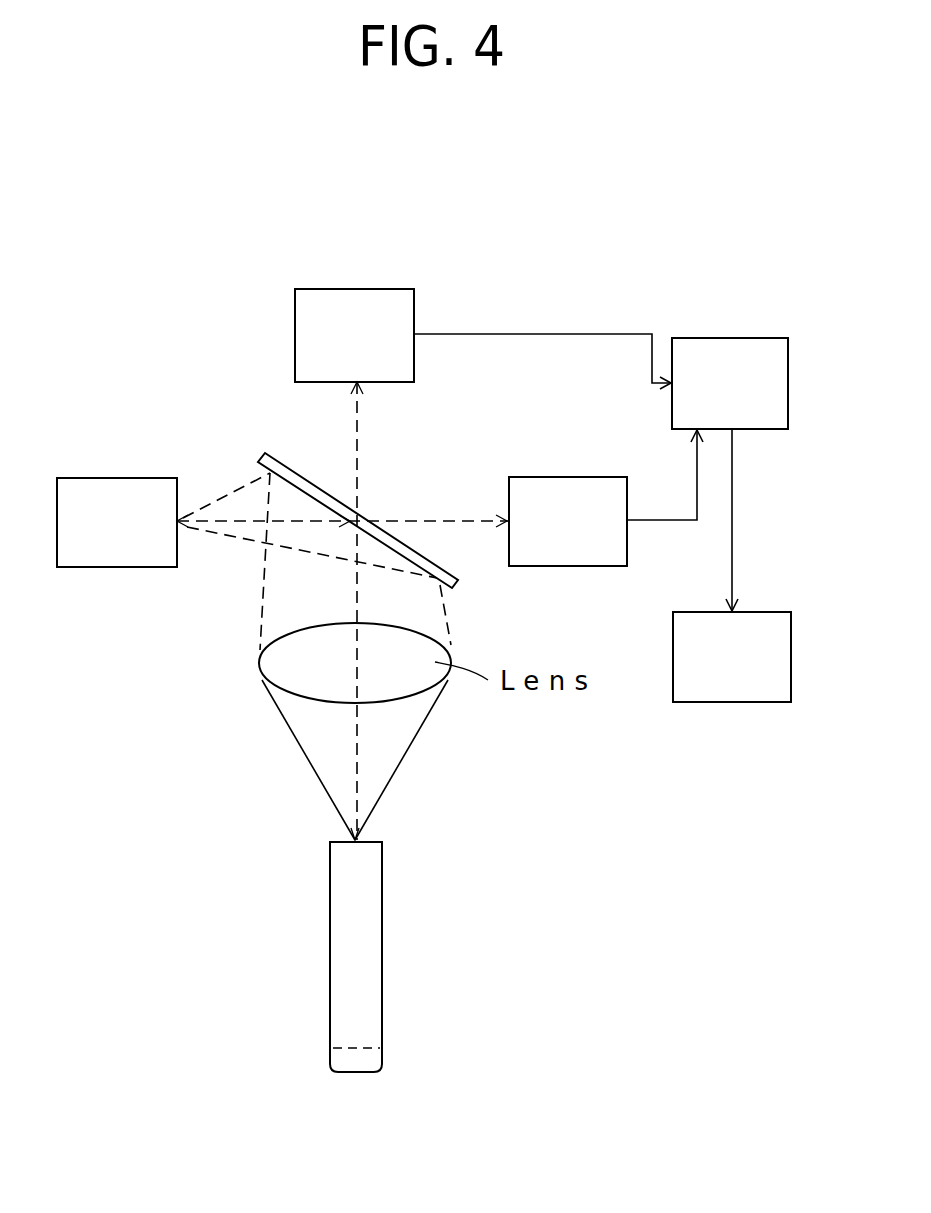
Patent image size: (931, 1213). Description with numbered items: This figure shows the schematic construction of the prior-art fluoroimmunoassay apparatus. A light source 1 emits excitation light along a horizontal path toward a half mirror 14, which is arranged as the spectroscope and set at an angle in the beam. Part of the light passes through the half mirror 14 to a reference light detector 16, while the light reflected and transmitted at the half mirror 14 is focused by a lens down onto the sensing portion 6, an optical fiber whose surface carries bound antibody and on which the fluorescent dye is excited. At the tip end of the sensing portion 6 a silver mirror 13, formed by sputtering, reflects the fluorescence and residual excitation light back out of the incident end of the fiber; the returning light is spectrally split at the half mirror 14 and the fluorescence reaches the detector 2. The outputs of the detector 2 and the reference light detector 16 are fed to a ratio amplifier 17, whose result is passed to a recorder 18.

The light source 1 is at (120, 497).
The detector 2 is at (397, 332).
The sensing portion 6 is at (362, 913).
The mirror 13 is at (363, 1060).
The half mirror 14 is at (296, 470).
The reference light detector 16 is at (565, 503).
The ratio amplifier 17 is at (723, 363).
The recorder 18 is at (775, 637).